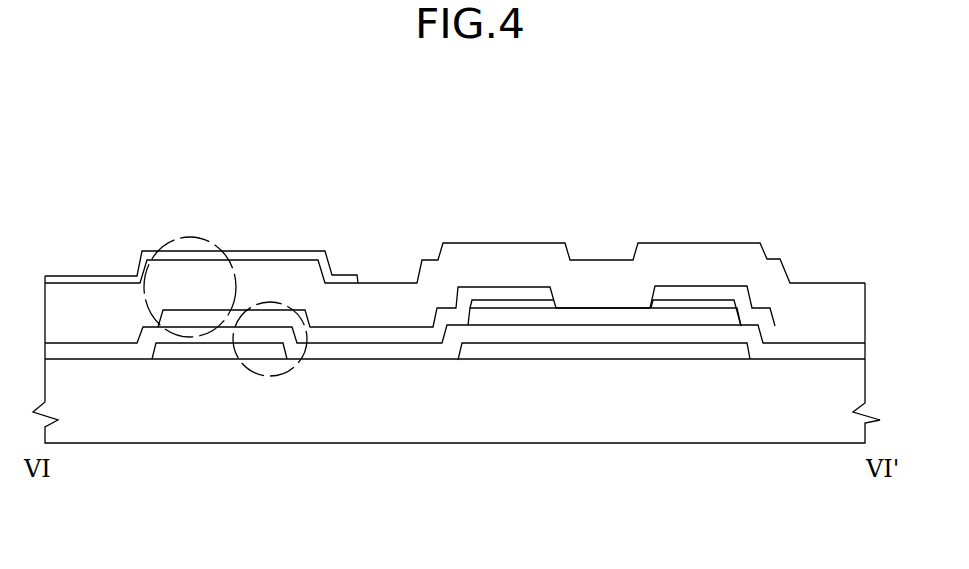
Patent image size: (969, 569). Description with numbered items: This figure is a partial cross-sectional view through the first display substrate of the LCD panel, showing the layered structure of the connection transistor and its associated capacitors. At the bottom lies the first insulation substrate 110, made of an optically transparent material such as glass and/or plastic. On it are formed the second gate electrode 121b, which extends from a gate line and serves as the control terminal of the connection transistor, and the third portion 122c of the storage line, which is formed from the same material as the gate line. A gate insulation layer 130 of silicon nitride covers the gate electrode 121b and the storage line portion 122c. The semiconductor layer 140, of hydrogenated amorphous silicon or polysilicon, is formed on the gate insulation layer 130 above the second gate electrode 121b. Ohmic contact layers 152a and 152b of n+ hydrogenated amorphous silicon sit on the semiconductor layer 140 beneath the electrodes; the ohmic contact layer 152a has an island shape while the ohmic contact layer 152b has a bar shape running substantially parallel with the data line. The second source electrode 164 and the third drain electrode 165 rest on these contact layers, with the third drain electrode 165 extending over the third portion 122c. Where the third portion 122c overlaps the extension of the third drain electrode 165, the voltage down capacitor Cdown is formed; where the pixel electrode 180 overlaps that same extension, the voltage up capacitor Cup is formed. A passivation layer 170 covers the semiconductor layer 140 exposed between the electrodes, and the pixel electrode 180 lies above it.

The first insulation substrate 110 is at (363, 425).
The second gate electrode 121b is at (600, 351).
The third portion 122c is at (172, 353).
The gate insulation layer 130 is at (652, 335).
The semiconductor layer 140 is at (490, 317).
The ohmic contact layer 152a is at (527, 306).
The ohmic contact layer 152b is at (702, 305).
The second source electrode 164 is at (719, 293).
The third drain electrode 165 is at (483, 292).
The passivation layer 170 is at (823, 311).
The pixel electrode 180 is at (106, 283).
The voltage up capacitor Cup is at (188, 237).
The voltage down capacitor Cdown is at (260, 373).